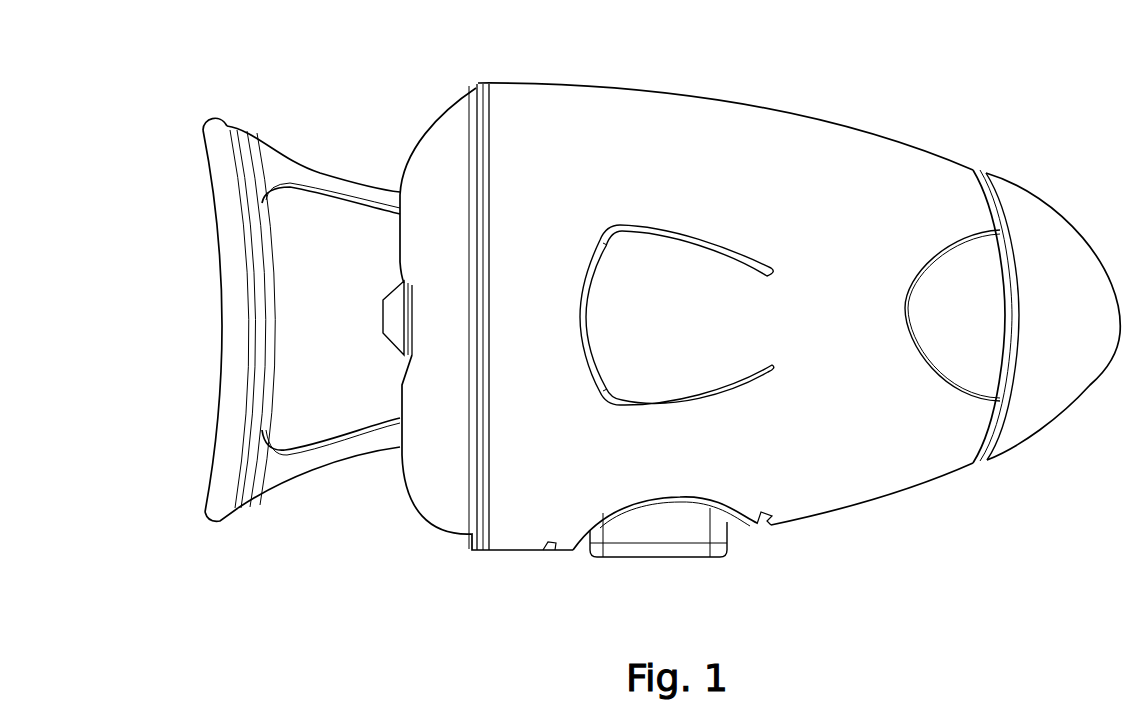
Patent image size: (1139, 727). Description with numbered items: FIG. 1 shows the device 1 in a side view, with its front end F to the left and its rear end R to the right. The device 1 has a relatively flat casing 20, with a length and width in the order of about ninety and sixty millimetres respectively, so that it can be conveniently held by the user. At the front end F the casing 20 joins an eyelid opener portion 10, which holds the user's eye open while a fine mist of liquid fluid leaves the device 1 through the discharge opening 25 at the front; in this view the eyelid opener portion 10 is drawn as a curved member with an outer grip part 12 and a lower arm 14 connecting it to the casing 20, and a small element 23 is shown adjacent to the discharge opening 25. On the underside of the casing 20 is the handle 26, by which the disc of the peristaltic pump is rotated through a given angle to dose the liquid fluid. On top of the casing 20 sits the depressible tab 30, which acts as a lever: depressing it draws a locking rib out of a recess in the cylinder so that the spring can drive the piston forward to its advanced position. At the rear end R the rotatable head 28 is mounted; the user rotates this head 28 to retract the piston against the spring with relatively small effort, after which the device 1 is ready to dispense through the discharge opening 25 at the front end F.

The device 1 is at (860, 104).
The eyelid opener portion 10 is at (280, 347).
The grip bar 12 is at (222, 333).
The lower handle arm 14 is at (334, 423).
The casing 20 is at (872, 503).
The switch button 23 is at (393, 351).
The discharge opening 25 is at (382, 323).
The handle 26 is at (659, 560).
The rotatable head 28 is at (1034, 408).
The depressible tab 30 is at (643, 336).
The front end F is at (418, 498).
The rear direction R is at (1100, 378).